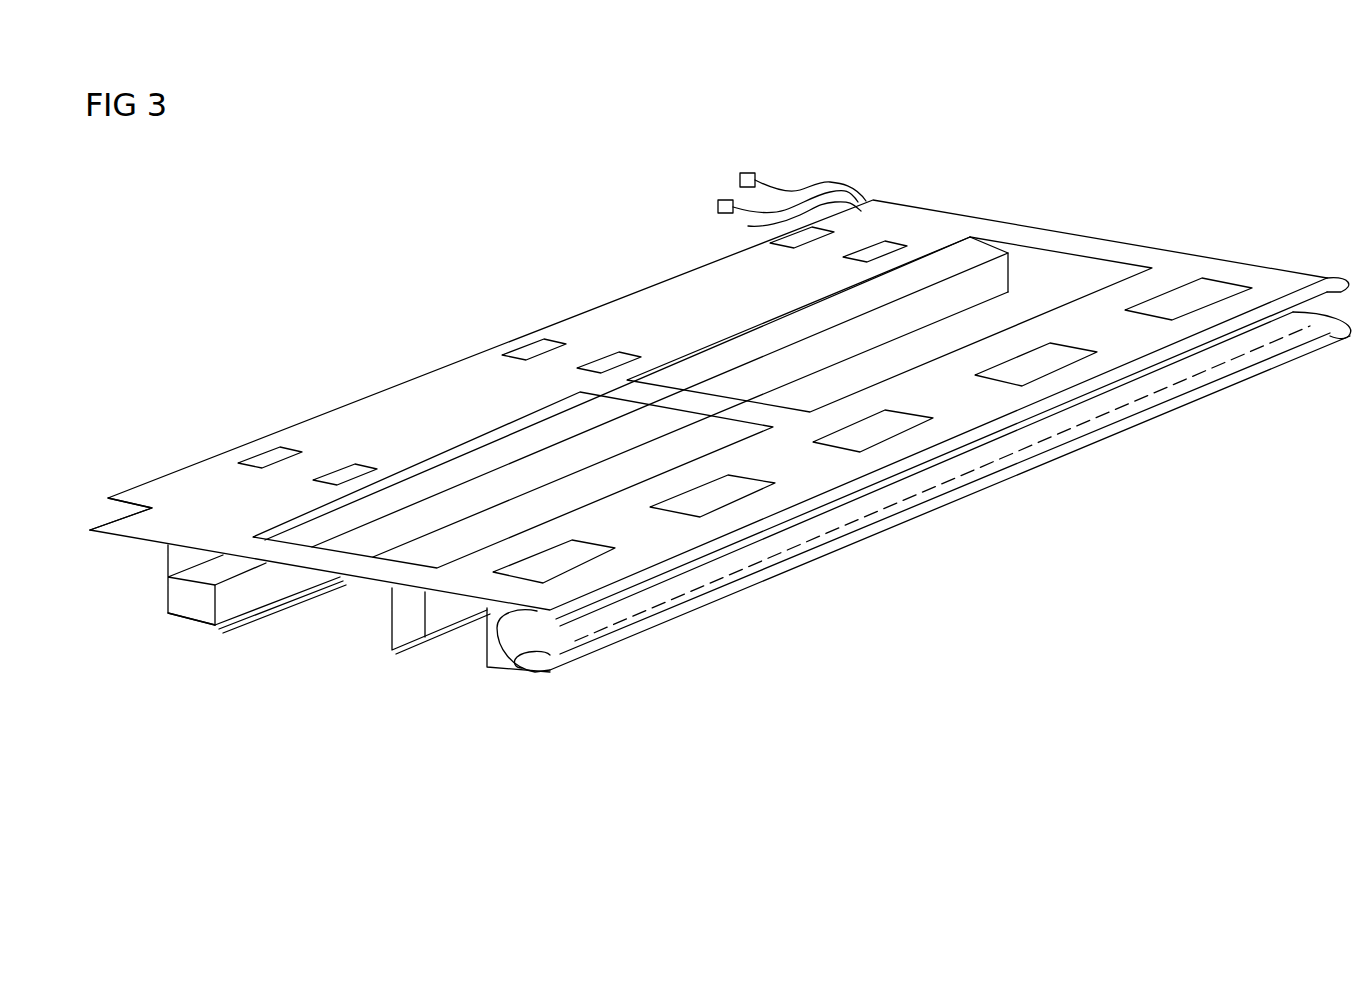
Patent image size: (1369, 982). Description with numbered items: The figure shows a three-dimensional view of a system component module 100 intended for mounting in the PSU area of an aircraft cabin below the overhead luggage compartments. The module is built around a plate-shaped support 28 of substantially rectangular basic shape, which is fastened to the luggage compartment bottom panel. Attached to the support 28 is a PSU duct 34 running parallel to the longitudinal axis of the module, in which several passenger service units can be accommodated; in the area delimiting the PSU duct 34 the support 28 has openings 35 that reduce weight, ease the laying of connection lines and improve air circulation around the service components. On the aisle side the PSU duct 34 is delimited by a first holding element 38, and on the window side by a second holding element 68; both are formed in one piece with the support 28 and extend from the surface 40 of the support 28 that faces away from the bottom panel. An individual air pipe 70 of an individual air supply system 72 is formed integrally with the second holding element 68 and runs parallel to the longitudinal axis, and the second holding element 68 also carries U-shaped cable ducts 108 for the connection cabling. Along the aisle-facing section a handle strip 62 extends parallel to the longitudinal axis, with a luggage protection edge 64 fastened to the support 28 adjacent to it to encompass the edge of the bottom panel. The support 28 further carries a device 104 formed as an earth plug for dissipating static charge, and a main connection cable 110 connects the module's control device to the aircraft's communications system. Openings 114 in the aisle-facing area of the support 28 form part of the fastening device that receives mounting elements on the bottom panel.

The system component module 100 is at (1181, 148).
The plate-shaped support 28 is at (925, 217).
The PSU duct 34 is at (319, 651).
The openings 35 is at (527, 512).
The first holding element 38 is at (430, 632).
The surface of the support 40 is at (129, 544).
The handle strip 62 is at (520, 667).
The luggage protection edge 64 is at (570, 615).
The second holding element 68 is at (195, 565).
The individual air pipe 70 is at (195, 618).
The individual air supply system 72 is at (1013, 240).
The device for dissipating static electrical charge 104 is at (721, 200).
The U-shaped cable ducts 108 is at (775, 243).
The main connection cable 110 is at (806, 188).
The openings 114 is at (1215, 293).